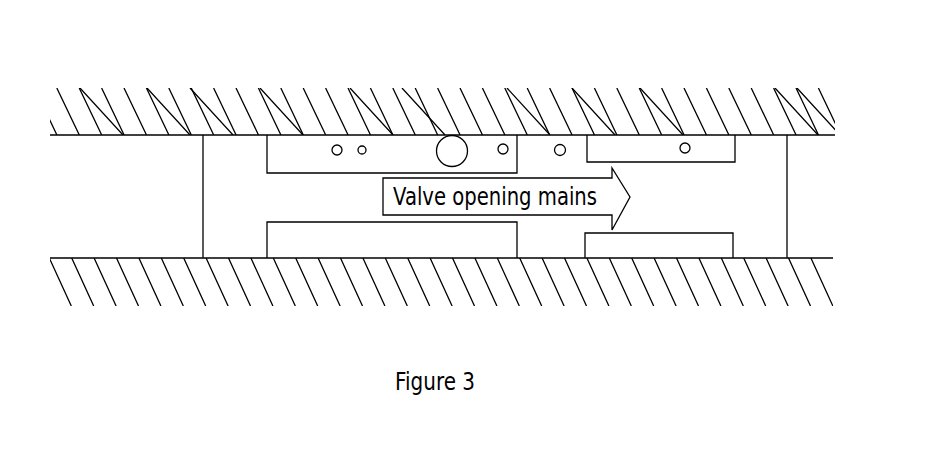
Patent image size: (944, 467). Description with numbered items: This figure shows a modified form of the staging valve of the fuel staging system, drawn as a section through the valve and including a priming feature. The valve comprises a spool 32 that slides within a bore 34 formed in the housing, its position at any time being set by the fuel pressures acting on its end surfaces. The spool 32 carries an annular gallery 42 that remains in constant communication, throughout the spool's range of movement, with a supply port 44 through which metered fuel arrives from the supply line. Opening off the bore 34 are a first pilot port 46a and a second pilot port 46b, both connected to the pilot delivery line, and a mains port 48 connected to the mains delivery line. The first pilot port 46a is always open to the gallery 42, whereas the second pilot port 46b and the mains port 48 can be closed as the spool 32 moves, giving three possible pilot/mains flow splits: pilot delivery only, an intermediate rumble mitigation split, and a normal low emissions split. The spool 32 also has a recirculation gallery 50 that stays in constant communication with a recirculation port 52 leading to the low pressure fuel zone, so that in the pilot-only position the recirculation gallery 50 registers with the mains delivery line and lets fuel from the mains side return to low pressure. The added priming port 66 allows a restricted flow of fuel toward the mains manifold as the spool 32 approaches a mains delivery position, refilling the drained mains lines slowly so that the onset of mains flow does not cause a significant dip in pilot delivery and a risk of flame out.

The spool 32 is at (236, 240).
The bore 34 is at (327, 258).
The annular gallery 42 is at (458, 242).
The supply port 44 is at (453, 136).
The first pilot port 46a is at (361, 145).
The second pilot port 46b is at (338, 144).
The mains port 48 is at (560, 144).
The recirculation gallery 50 is at (660, 248).
The recirculation port 52 is at (685, 143).
The priming port 66 is at (503, 144).